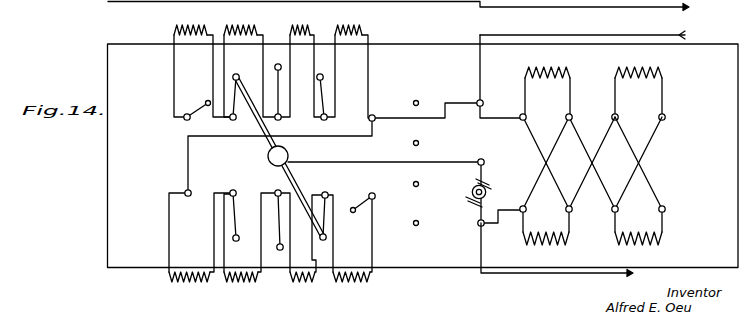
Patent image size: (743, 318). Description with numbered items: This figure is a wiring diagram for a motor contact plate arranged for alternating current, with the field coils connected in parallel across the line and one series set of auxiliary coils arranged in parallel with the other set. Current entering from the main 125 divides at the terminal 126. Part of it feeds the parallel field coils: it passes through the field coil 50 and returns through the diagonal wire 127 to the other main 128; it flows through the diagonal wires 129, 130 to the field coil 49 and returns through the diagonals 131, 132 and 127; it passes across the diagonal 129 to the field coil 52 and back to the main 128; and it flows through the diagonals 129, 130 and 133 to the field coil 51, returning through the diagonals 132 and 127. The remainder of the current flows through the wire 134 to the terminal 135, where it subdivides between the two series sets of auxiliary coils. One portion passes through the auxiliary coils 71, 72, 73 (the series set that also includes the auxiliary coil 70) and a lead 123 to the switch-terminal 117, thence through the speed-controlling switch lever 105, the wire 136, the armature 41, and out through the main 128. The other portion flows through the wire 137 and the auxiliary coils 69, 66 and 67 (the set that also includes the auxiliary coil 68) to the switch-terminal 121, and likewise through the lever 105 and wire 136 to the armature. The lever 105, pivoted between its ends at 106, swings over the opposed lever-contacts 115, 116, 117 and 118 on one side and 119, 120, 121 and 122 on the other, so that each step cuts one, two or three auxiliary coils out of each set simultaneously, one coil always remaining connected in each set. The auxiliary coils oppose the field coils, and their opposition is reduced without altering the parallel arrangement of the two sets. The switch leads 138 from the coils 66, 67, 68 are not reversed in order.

The armature 41 is at (471, 191).
The field coil 49 is at (663, 73).
The field coil 50 is at (571, 73).
The field coil 51 is at (657, 238).
The field coil 52 is at (569, 243).
The auxiliary coil 66 is at (236, 285).
The auxiliary coil 67 is at (298, 285).
The auxiliary coil 68 is at (346, 285).
The auxiliary coil 69 is at (179, 285).
The auxiliary coil 70 is at (191, 26).
The auxiliary coil 71 is at (357, 26).
The auxiliary coil 72 is at (311, 26).
The auxiliary coil 73 is at (253, 26).
The speed-controlling switch lever 105 is at (265, 143).
The pivot 106 is at (289, 156).
The lever-contact 115 is at (323, 76).
The lever-contact 116 is at (281, 62).
The lever-contact 117 is at (237, 75).
The lever-contact 118 is at (207, 101).
The lever-contact 119 is at (234, 243).
The lever-contact 120 is at (284, 254).
The lever-contact 121 is at (327, 237).
The lever-contact 122 is at (352, 207).
The lead 123 is at (199, 112).
The main 125 is at (540, 35).
The terminal 126 is at (482, 102).
The diagonal wire 127 is at (540, 176).
The main 128 is at (570, 279).
The diagonal wire 129 is at (531, 129).
The diagonal wire 130 is at (597, 156).
The diagonal wire 131 is at (648, 151).
The diagonal wire 132 is at (575, 127).
The diagonal wire 133 is at (652, 188).
The wire 134 is at (404, 116).
The terminal 135 is at (374, 121).
The wire 136 is at (424, 160).
The wire 137 is at (346, 138).
The switch lead 138 is at (240, 207).